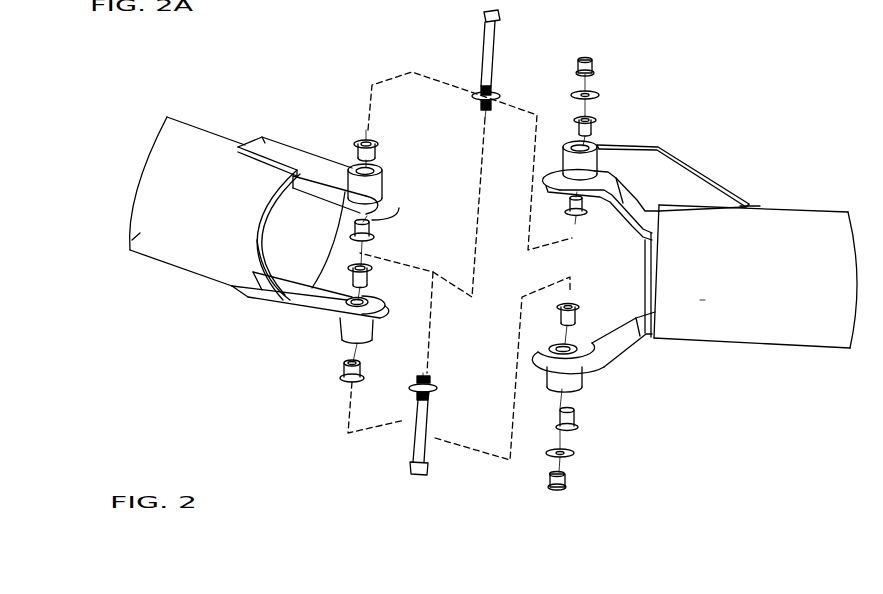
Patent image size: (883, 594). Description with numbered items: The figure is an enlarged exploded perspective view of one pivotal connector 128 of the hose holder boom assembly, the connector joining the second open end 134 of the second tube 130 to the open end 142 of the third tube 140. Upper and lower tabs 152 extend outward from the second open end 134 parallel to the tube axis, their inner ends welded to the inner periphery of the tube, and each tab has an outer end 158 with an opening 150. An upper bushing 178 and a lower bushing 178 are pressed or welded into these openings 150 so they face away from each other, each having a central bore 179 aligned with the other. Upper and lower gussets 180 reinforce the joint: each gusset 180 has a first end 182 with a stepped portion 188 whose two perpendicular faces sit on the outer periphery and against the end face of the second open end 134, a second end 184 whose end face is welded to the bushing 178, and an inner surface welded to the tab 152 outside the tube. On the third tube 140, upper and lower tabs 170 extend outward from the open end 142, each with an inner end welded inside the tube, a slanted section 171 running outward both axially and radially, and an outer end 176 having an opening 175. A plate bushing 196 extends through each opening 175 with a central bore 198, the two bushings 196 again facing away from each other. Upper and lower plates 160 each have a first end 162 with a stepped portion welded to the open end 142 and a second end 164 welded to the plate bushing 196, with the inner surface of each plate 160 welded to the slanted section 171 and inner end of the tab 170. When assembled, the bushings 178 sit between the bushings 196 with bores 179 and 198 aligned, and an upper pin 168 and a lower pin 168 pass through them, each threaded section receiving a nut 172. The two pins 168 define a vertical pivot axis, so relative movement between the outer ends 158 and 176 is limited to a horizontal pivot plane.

The pivotal connector 128 is at (603, 78).
The second tube 130 is at (138, 246).
The second open end of second tube 134 is at (217, 263).
The third tube 140 is at (825, 337).
The open end of third tube 142 is at (680, 323).
The opening 150 is at (363, 295).
The upper and lower tabs 152 is at (283, 277).
The outer end of tab 158 is at (393, 200).
The upper and lower plates 160 is at (693, 193).
The first end of plate 162 is at (750, 205).
The second end of plate 164 is at (617, 160).
The pin 168 is at (497, 40).
The upper and lower tabs 170 is at (632, 227).
The slanted section 171 is at (623, 203).
The nut 172 is at (585, 57).
The opening 175 is at (547, 343).
The outer end of tab 176 is at (552, 175).
The upper and lower bushings 178 is at (375, 173).
The central bore 179 is at (353, 167).
The upper and lower gussets 180 is at (313, 167).
The first end of gusset 182 is at (252, 148).
The second end of gusset 184 is at (338, 333).
The stepped portion 188 is at (253, 155).
The upper and lower bushings 196 is at (563, 150).
The central bore 198 is at (588, 147).